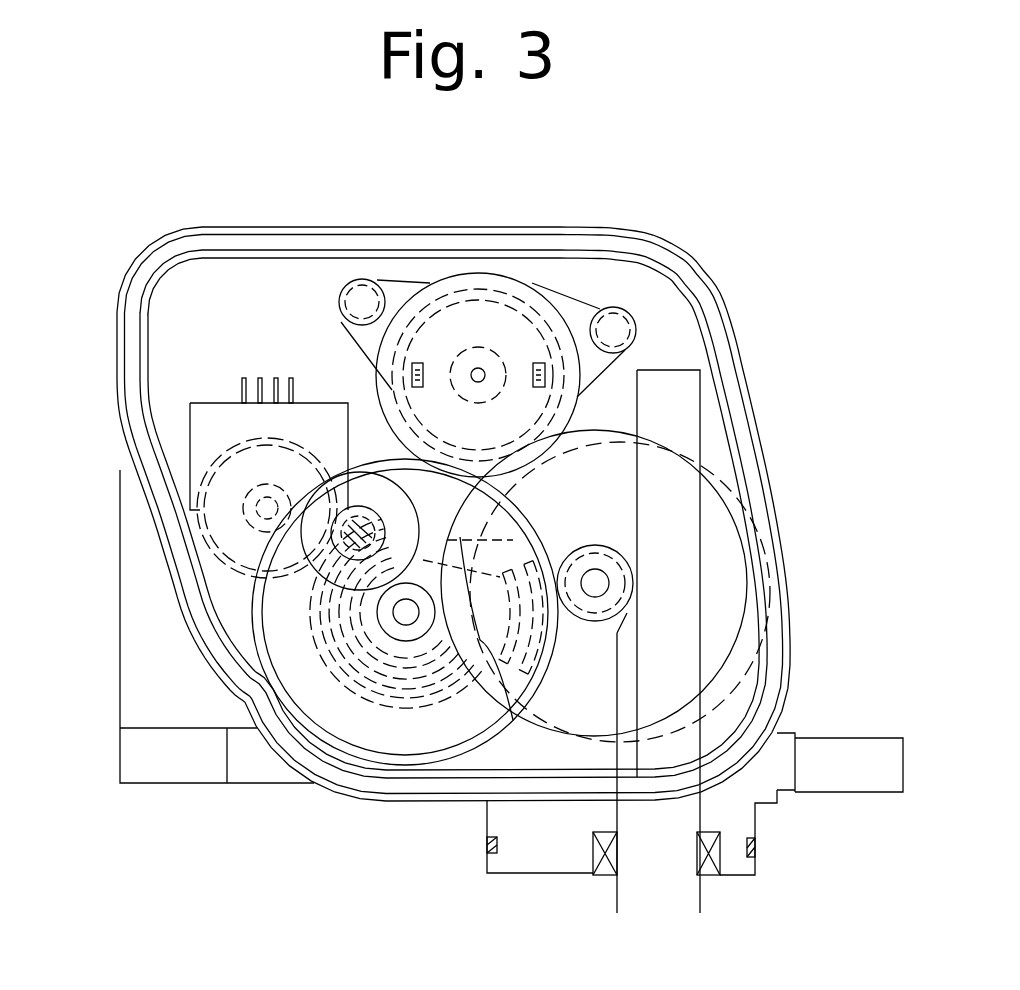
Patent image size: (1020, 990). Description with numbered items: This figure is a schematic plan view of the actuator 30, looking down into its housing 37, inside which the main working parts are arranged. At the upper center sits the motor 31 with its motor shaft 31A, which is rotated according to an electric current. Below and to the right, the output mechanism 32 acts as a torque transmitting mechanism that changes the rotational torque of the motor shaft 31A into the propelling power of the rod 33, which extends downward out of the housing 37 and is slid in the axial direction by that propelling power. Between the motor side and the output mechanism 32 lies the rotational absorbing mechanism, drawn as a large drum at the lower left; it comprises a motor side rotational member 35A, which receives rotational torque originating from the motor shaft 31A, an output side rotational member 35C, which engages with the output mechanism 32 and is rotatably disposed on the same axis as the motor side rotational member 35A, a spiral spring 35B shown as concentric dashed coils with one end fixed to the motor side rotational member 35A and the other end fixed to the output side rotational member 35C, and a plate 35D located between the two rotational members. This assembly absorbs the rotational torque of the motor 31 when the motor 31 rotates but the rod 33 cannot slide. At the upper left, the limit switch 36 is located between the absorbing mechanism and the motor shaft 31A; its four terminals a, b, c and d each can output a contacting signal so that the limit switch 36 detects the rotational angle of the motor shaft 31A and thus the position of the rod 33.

The actuator 30 is at (763, 422).
The motor 31 is at (532, 283).
The motor shaft 31A is at (478, 373).
The output mechanism 32 is at (723, 552).
The rod 33 is at (678, 883).
The motor side rotational member 35A is at (495, 728).
The spiral spring 35B is at (385, 690).
The output side rotational member 35C is at (480, 640).
The plate 35D is at (512, 543).
The limit switch 36 is at (195, 427).
The housing 37 is at (722, 293).
The terminal a is at (244, 378).
The terminal b is at (260, 378).
The terminal c is at (276, 378).
The terminal d is at (291, 378).